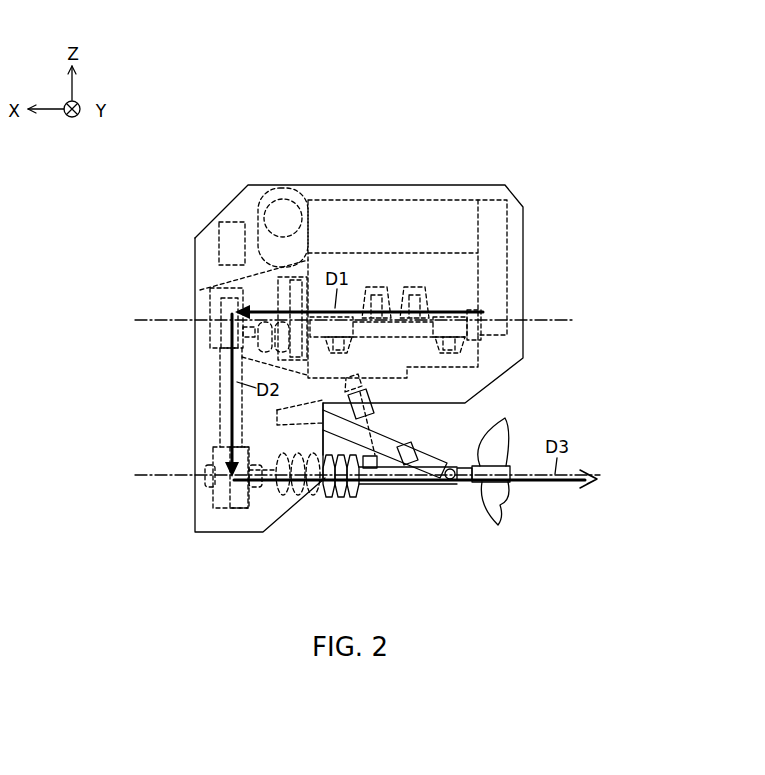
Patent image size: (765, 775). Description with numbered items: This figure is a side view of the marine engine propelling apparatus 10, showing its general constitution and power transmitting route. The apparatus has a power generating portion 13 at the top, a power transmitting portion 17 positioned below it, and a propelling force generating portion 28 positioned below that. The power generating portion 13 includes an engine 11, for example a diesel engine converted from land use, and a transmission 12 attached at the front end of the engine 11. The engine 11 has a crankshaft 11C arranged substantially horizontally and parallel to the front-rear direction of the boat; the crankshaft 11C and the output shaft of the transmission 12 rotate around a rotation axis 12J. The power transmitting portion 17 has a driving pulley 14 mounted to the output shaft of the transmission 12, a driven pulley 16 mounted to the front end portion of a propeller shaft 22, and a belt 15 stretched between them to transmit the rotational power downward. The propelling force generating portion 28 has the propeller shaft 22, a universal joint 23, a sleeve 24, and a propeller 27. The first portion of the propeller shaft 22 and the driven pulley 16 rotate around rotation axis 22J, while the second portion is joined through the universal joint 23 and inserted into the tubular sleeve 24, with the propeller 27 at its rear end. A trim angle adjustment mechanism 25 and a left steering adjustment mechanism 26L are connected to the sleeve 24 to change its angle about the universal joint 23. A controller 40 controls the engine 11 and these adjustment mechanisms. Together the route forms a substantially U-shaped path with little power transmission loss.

The engine propelling apparatus 10 is at (206, 126).
The controller 40 is at (233, 222).
The power generating portion 13 is at (303, 134).
The transmission 12 is at (252, 275).
The engine 11 is at (398, 196).
The crankshaft 11C is at (434, 286).
The rotation axis 12J is at (540, 322).
The driving pulley 14 is at (212, 341).
The belt 15 is at (221, 402).
The driven pulley 16 is at (212, 455).
The power transmitting portion 17 is at (118, 348).
The rotation axis 22J is at (152, 484).
The propeller shaft 22 is at (262, 485).
The universal joint 23 is at (330, 503).
The sleeve 24 is at (397, 487).
The trim angle adjustment mechanism 25 is at (400, 423).
The left steering adjustment mechanism 26L is at (423, 451).
The propeller 27 is at (519, 508).
The propelling force generating portion 28 is at (245, 580).